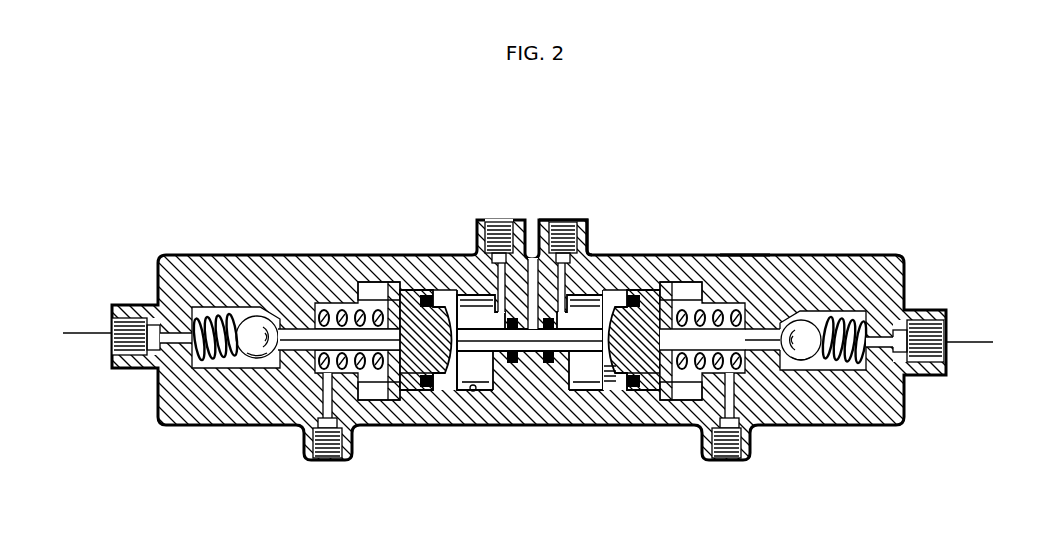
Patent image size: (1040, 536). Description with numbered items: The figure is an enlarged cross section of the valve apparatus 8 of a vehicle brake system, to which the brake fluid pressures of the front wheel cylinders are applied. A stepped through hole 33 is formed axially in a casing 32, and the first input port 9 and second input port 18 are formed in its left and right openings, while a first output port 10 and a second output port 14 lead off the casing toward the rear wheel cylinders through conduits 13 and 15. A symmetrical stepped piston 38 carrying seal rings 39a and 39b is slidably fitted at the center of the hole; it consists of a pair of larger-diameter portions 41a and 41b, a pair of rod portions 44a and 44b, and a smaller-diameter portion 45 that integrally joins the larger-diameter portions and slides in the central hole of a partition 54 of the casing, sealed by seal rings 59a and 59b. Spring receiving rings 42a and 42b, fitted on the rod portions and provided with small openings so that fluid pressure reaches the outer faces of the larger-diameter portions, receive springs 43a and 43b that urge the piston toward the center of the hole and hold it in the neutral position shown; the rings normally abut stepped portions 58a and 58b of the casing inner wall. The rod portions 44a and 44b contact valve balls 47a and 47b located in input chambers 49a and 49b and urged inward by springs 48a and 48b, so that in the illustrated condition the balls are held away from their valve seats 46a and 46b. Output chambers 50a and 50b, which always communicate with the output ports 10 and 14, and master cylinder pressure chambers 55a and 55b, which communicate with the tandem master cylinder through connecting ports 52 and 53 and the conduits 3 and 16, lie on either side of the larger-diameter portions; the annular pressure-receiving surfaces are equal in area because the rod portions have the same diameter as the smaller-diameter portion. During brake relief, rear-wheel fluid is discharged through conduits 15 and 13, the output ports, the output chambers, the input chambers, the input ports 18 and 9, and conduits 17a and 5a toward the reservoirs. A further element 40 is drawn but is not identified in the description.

The conduit 3 is at (512, 221).
The conduit 5a is at (78, 332).
The valve apparatus 8 is at (745, 254).
The first input port 9 is at (110, 337).
The first output port 10 is at (330, 456).
The conduit 13 is at (328, 462).
The second output port 14 is at (725, 462).
The conduit 15 is at (722, 481).
The conduit 16 is at (561, 221).
The conduit 17a is at (968, 341).
The second input port 18 is at (947, 345).
The casing 32 is at (305, 257).
The stepped through hole 33 is at (473, 392).
The stepped piston 38 is at (610, 360).
The seal ring 39a is at (420, 290).
The seal ring 39b is at (640, 290).
The central slot 40 is at (531, 256).
The larger-diameter portion 41a is at (412, 382).
The larger-diameter portion 41b is at (655, 388).
The spring receiving ring 42a is at (379, 303).
The spring receiving ring 42b is at (681, 303).
The spring 43a is at (350, 303).
The spring 43b is at (722, 315).
The rod portion 44a is at (399, 387).
The rod portion 44b is at (687, 387).
The smaller-diameter portion 45 is at (529, 352).
The valve seat 46a is at (259, 360).
The valve seat 46b is at (791, 362).
The valve ball 47a is at (260, 320).
The valve ball 47b is at (800, 322).
The spring 48a is at (203, 256).
The spring 48b is at (845, 327).
The input chamber 49a is at (220, 369).
The input chamber 49b is at (823, 369).
The output chamber 50a is at (375, 290).
The output chamber 50b is at (692, 297).
The connecting port 52 is at (499, 221).
The connecting port 53 is at (566, 221).
The partition 54 is at (500, 387).
The master cylinder pressure chamber 55a is at (480, 342).
The master cylinder pressure chamber 55b is at (581, 342).
The stepped portion 58a is at (402, 288).
The stepped portion 58b is at (646, 290).
The seal ring 59a is at (512, 364).
The seal ring 59b is at (549, 364).